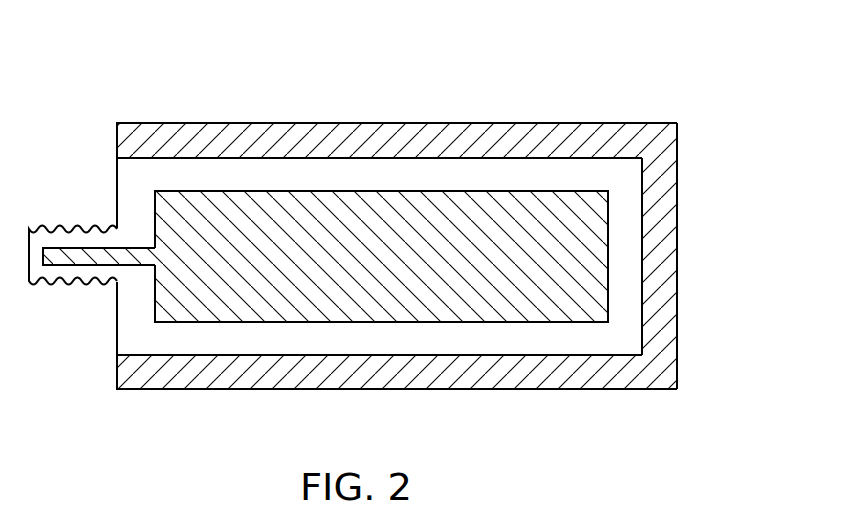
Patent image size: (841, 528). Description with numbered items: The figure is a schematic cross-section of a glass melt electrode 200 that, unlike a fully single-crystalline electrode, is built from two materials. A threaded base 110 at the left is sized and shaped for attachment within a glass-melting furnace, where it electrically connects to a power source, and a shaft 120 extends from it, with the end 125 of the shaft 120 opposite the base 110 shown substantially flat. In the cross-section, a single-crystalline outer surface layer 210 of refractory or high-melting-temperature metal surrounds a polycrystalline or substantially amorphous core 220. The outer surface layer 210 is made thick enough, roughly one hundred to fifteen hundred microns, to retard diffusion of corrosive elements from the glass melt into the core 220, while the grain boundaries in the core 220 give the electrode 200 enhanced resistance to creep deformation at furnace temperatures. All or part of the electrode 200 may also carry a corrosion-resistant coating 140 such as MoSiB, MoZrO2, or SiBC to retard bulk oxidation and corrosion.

The glass melt electrode 200 is at (165, 72).
The base 110 is at (36, 284).
The shaft 120 is at (282, 167).
The end of the shaft 125 is at (645, 237).
The corrosion-resistant coating 140 is at (631, 390).
The outer surface layer 210 is at (403, 183).
The core 220 is at (526, 205).